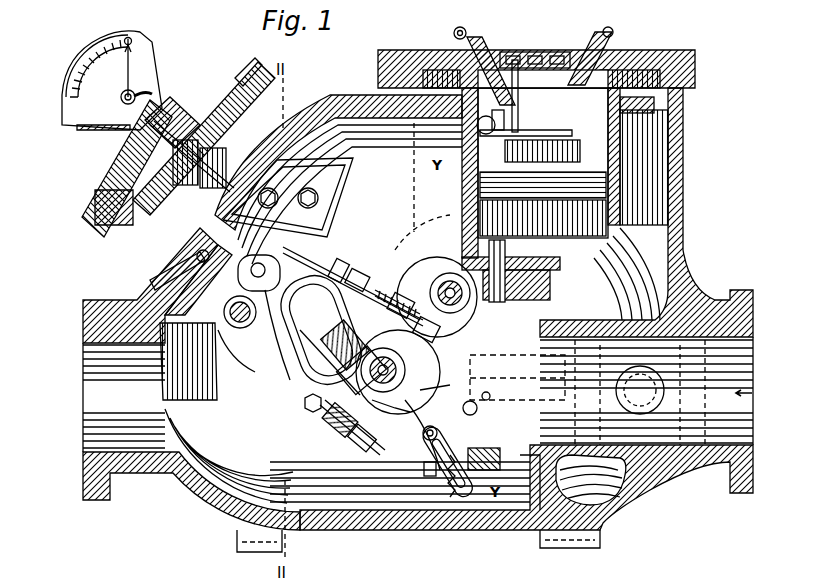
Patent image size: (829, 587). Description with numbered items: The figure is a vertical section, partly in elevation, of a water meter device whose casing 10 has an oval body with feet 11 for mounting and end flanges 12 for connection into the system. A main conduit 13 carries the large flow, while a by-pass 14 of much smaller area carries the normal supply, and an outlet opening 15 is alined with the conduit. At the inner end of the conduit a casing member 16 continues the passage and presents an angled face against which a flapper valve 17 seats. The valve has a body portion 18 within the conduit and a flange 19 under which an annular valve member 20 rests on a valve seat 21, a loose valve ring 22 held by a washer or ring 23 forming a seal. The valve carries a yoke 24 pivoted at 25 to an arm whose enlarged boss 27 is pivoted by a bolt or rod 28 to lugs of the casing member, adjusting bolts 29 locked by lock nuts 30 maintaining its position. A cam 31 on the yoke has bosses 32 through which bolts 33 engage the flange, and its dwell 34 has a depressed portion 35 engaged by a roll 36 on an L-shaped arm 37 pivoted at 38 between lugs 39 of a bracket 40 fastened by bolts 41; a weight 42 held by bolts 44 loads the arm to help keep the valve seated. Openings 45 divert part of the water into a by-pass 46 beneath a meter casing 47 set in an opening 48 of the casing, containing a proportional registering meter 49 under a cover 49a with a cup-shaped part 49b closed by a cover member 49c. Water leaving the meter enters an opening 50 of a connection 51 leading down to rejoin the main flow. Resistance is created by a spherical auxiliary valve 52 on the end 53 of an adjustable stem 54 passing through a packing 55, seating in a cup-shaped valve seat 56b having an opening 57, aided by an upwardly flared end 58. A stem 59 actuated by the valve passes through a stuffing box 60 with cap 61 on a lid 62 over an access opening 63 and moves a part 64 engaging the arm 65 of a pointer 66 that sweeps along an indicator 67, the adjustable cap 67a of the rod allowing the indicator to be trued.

The casing 10 is at (413, 415).
The feet 11 is at (601, 543).
The flanges 12 is at (104, 500).
The main conduit 13 is at (752, 400).
The by-pass 14 is at (640, 398).
The outlet opening 15 is at (136, 428).
The casing member 16 is at (522, 465).
The valve 17 is at (340, 345).
The body portion 18 is at (392, 370).
The flange 19 is at (405, 300).
The annular valve member 20 is at (322, 420).
The valve seat 21 is at (350, 435).
The valve ring 22 is at (355, 452).
The washer or ring 23 is at (432, 392).
The yoke 24 is at (335, 350).
The pivot 25 is at (345, 338).
The enlarged boss 27 is at (425, 265).
The bolt or rod 28 is at (450, 282).
The bolts 29 is at (419, 314).
The lock nuts 30 is at (305, 403).
The cam 31 is at (300, 390).
The bosses 32 is at (360, 262).
The bolts 33 is at (345, 262).
The extended portion or dwell 34 is at (280, 355).
The depressed portion 35 is at (345, 264).
The roll 36 is at (321, 330).
The arm 37 is at (252, 266).
The pivot 38 is at (243, 330).
The lugs or bosses 39 is at (222, 345).
The bracket 40 is at (168, 302).
The bolts 41 is at (160, 270).
The weight 42 is at (320, 202).
The bolts 44 is at (292, 197).
The openings 45 is at (517, 377).
The by-pass 46 is at (530, 283).
The meter casing 47 is at (625, 140).
The opening 48 is at (670, 97).
The proportional registering meter 49 is at (605, 205).
The cover 49a is at (412, 70).
The cup-shaped part 49b is at (615, 60).
The cover member 49c is at (468, 30).
The by-pass or opening 50 is at (462, 176).
The connection 51 is at (478, 408).
The auxiliary valve 52 is at (455, 500).
The end 53 is at (434, 428).
The bolt or stem 54 is at (458, 478).
The packing 55 is at (480, 472).
The valve seat 56b is at (430, 478).
The opening 57 is at (396, 298).
The upwardly flared end 58 is at (415, 460).
The rod or stem 59 is at (238, 75).
The stuffing box 60 is at (212, 115).
The cap 61 is at (290, 118).
The lid or head 62 is at (128, 182).
The opening 63 is at (98, 224).
The part 64 is at (168, 100).
The arm 65 is at (150, 88).
The pointer 66 is at (112, 55).
The indicator 67 is at (72, 85).
The adjustable end or cap 67a is at (205, 190).